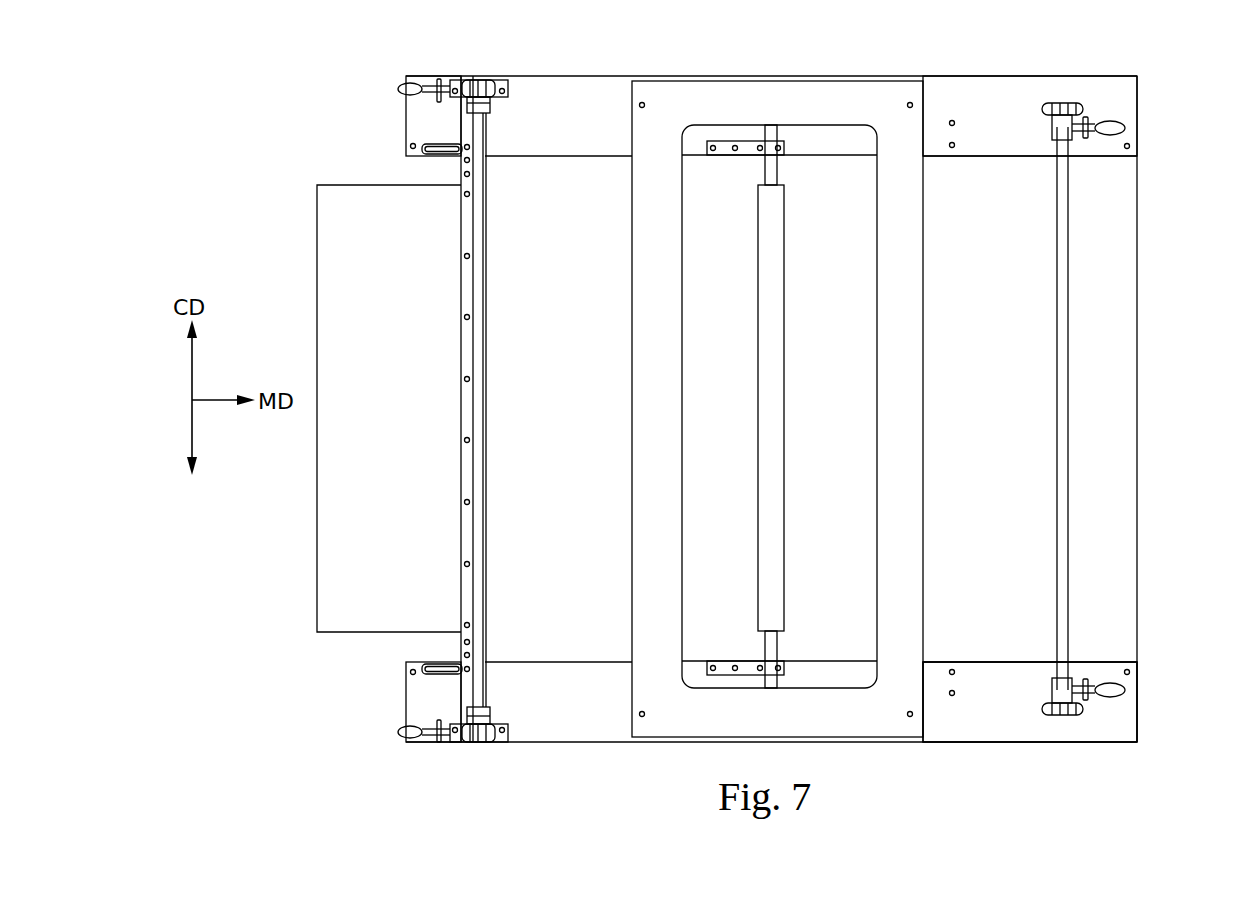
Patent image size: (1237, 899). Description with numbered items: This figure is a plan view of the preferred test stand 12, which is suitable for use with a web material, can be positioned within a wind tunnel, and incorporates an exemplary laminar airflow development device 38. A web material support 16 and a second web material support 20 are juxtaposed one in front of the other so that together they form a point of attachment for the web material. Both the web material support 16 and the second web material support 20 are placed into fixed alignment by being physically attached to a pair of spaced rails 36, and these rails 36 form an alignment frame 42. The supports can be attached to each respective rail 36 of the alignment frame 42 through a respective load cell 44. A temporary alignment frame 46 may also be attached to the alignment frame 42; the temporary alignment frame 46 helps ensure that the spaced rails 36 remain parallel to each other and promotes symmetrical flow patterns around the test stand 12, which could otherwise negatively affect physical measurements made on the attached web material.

The test stand 12 is at (281, 147).
The web material support 16 is at (480, 678).
The second web material support 20 is at (1068, 425).
The spaced rail 36 is at (1012, 127).
The laminar airflow development device 38 is at (403, 422).
The alignment frame 42 is at (1152, 633).
The load cell 44 is at (495, 78).
The temporary alignment frame 46 is at (901, 452).